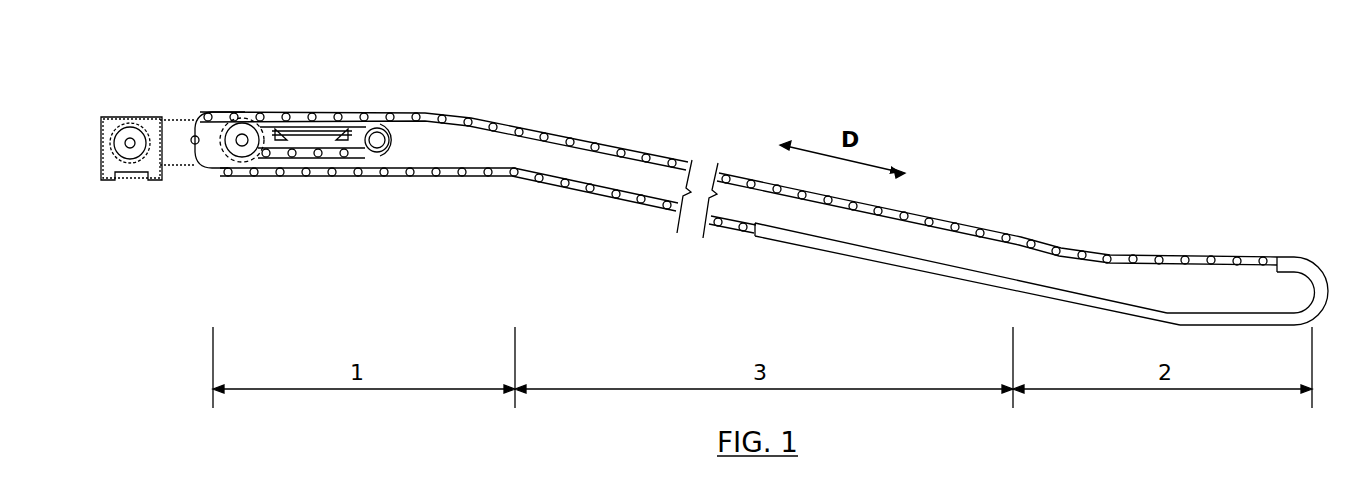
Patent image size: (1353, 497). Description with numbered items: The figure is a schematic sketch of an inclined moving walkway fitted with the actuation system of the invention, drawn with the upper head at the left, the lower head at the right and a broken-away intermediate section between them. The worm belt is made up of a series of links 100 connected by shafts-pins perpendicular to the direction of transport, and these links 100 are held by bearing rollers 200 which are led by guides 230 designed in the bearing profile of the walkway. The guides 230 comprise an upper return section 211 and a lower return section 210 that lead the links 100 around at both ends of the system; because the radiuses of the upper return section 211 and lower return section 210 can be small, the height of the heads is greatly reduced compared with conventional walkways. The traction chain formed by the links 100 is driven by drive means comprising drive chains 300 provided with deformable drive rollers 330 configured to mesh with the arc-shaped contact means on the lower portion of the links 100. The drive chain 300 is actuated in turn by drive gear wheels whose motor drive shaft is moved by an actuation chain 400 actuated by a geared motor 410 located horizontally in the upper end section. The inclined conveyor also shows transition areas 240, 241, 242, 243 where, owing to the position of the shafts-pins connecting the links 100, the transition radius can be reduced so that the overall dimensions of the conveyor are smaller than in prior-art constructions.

The links 100 is at (945, 222).
The bearing rollers 200 is at (598, 151).
The lower return section 210 is at (1300, 262).
The upper return section 211 is at (223, 110).
The guides 230 is at (1240, 321).
The transition area 240 is at (430, 114).
The transition area 241 is at (516, 171).
The transition area 242 is at (1103, 253).
The transition area 243 is at (1178, 323).
The drive chain 300 is at (328, 152).
The deformable drive rollers 330 is at (292, 155).
The actuation chain 400 is at (172, 123).
The geared motor 410 is at (123, 132).